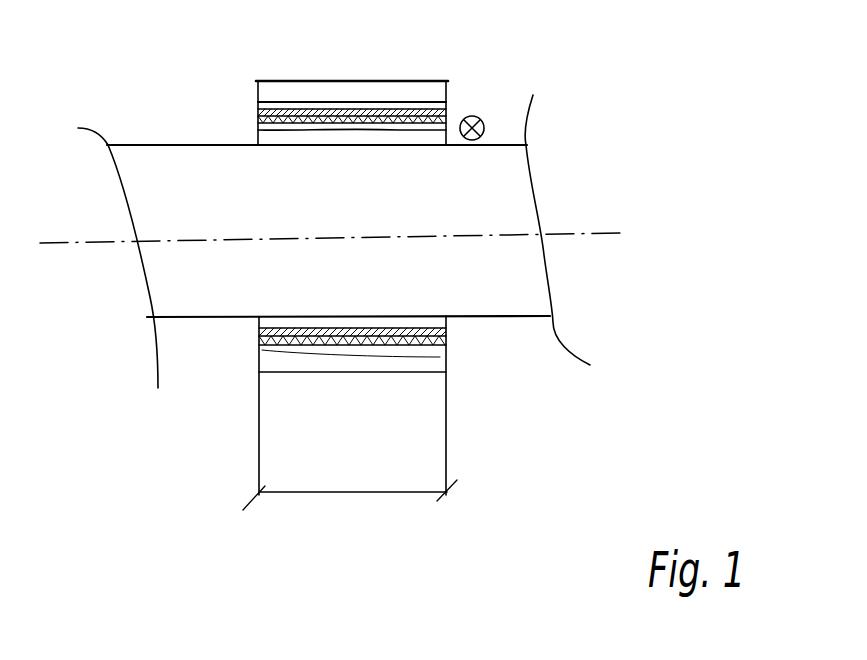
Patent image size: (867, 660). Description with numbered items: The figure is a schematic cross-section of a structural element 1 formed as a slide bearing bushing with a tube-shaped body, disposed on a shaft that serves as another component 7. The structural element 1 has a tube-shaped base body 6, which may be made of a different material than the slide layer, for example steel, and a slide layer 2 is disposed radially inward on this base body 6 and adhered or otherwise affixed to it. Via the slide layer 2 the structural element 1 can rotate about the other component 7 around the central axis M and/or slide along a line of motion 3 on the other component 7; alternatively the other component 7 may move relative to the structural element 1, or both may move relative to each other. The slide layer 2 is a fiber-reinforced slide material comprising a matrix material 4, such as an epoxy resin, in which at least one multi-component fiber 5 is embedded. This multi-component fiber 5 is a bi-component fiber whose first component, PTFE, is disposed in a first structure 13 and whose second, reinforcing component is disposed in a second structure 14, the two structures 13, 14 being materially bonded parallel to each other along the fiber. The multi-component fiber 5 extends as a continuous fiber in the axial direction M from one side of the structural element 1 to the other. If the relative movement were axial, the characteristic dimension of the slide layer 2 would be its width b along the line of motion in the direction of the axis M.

The structural element 1 is at (426, 75).
The slide layer 2 is at (280, 129).
The line of motion 3 is at (473, 115).
The matrix material 4 is at (428, 323).
The multi-component fiber 5 is at (450, 353).
The base body 6 is at (317, 363).
The other component 7 is at (478, 182).
The first structure 13 is at (382, 347).
The second structure 14 is at (366, 332).
The central axis M is at (603, 235).
The width b is at (390, 492).